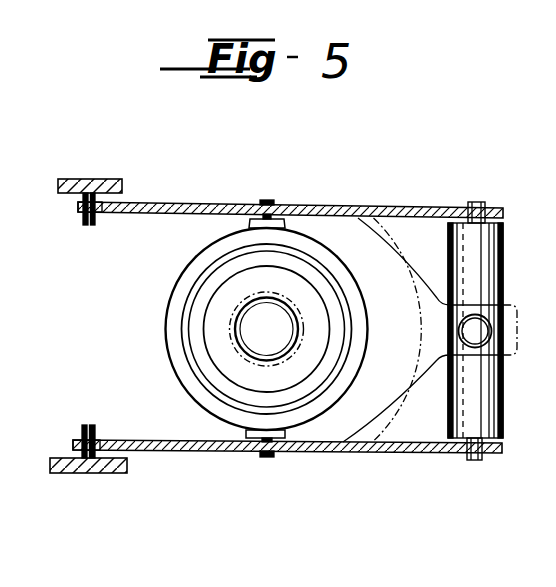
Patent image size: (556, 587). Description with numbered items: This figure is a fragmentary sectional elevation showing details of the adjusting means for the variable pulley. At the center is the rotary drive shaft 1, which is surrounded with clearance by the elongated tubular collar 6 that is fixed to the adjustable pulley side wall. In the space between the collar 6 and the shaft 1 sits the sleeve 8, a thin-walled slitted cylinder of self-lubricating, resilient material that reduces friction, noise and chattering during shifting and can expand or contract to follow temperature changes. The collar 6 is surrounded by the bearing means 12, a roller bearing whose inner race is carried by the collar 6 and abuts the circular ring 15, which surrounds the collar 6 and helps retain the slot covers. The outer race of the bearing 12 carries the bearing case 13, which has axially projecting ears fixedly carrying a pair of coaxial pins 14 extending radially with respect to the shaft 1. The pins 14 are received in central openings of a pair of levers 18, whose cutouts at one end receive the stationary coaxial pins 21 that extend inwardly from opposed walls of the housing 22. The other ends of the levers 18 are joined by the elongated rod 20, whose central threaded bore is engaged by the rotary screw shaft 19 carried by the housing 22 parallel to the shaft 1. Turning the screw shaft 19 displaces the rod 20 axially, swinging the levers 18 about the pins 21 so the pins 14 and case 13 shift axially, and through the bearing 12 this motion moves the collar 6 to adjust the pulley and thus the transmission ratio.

The rotary drive shaft 1 is at (236, 318).
The elongated tubular collar 6 is at (315, 350).
The sleeve 8 is at (231, 331).
The bearing means 12 is at (187, 300).
The bearing case 13 is at (187, 270).
The coaxial pins 14 is at (262, 201).
The circular ring 15 is at (176, 386).
The levers 18 is at (367, 207).
The rotary screw shaft 19 is at (480, 333).
The elongated rod 20 is at (500, 232).
The stationary coaxial pins 21 is at (83, 217).
The housing 22 is at (73, 179).